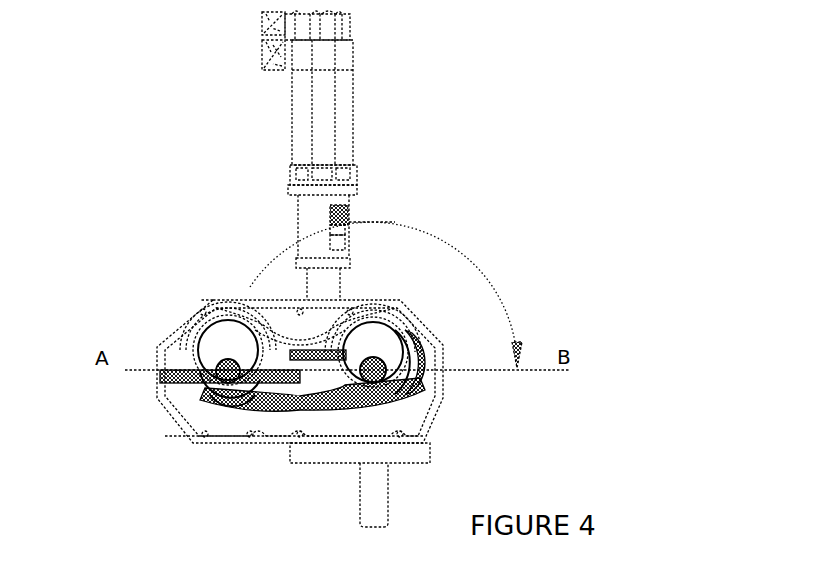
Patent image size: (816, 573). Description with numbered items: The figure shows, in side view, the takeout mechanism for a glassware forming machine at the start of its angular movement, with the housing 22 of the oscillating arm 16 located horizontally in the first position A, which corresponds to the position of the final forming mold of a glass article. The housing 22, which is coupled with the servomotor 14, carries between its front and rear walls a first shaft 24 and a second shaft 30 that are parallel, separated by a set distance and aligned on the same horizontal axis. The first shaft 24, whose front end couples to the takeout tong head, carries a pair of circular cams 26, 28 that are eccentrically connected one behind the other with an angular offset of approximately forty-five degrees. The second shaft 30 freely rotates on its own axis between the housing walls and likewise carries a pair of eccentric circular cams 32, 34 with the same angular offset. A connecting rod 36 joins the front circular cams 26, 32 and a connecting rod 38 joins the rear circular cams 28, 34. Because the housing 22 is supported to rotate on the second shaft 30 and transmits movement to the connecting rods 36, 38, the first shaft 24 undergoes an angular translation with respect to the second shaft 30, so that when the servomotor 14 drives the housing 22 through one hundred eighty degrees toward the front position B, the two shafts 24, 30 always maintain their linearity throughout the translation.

The servomotor 14 is at (335, 108).
The oscillating arm 16 is at (158, 421).
The housing 22 is at (432, 327).
The first shaft 24 is at (160, 378).
The front circular cam 26 is at (215, 342).
The rear circular cam 28 is at (238, 405).
The second shaft 30 is at (378, 368).
The front circular cam 32 is at (378, 340).
The rear circular cam 34 is at (412, 385).
The connecting rod 36 is at (267, 332).
The connecting rod 38 is at (305, 393).